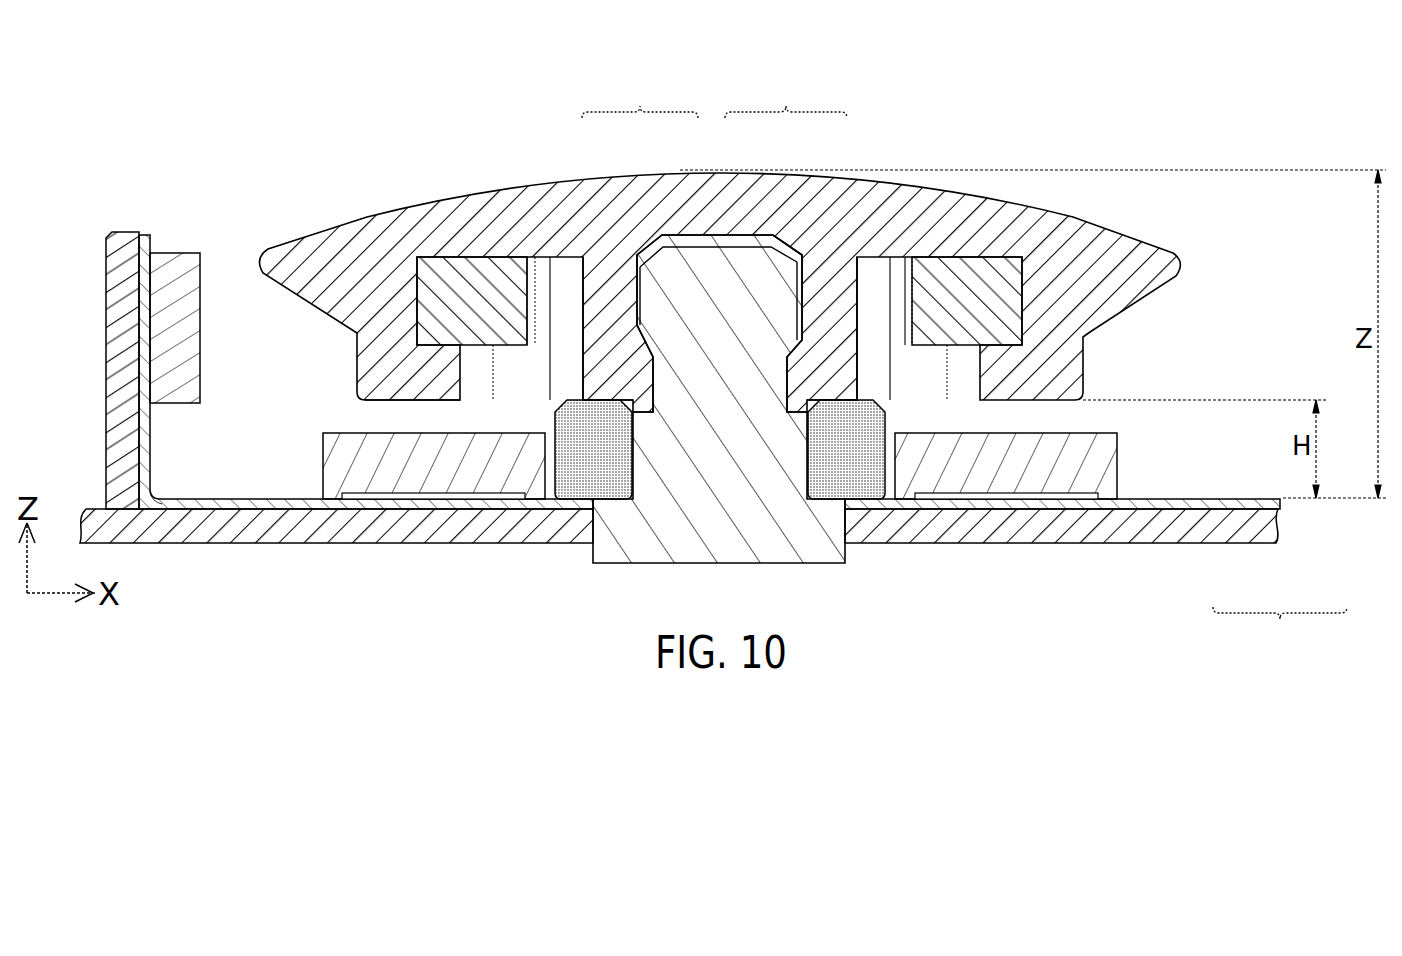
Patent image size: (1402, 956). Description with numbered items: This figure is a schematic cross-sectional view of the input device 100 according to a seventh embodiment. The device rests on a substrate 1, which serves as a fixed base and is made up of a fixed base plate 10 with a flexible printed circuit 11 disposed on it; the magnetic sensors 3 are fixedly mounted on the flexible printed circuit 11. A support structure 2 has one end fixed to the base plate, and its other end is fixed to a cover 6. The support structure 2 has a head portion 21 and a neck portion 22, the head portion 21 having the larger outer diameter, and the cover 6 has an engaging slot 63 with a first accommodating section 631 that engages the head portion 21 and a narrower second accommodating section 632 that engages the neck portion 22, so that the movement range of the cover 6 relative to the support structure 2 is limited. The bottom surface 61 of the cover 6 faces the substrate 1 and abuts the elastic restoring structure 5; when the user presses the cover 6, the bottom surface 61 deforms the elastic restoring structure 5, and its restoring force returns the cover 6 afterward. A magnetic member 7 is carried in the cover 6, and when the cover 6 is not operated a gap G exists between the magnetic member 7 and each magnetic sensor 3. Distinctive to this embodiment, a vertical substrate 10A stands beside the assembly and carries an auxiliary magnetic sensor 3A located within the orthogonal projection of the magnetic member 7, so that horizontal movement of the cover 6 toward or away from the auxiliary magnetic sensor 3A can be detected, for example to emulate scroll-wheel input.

The input device 100 is at (1153, 216).
The substrate 1 is at (1280, 629).
The fixed base plate 10 is at (1238, 546).
The vertical substrate 10A is at (122, 318).
The flexible printed circuit 11 is at (1290, 505).
The support structure 2 is at (640, 98).
The head portion 21 is at (702, 273).
The neck portion 22 is at (695, 373).
The magnetic sensor 3 is at (314, 452).
The auxiliary magnetic sensor 3A is at (180, 248).
The elastic restoring structure 5 is at (615, 508).
The cover 6 is at (310, 229).
The bottom surface 61 is at (427, 403).
The engaging slot 63 is at (786, 98).
The first accommodating section 631 is at (742, 228).
The second accommodating section 632 is at (797, 376).
The magnetic member 7 is at (412, 302).
The gap G is at (382, 418).